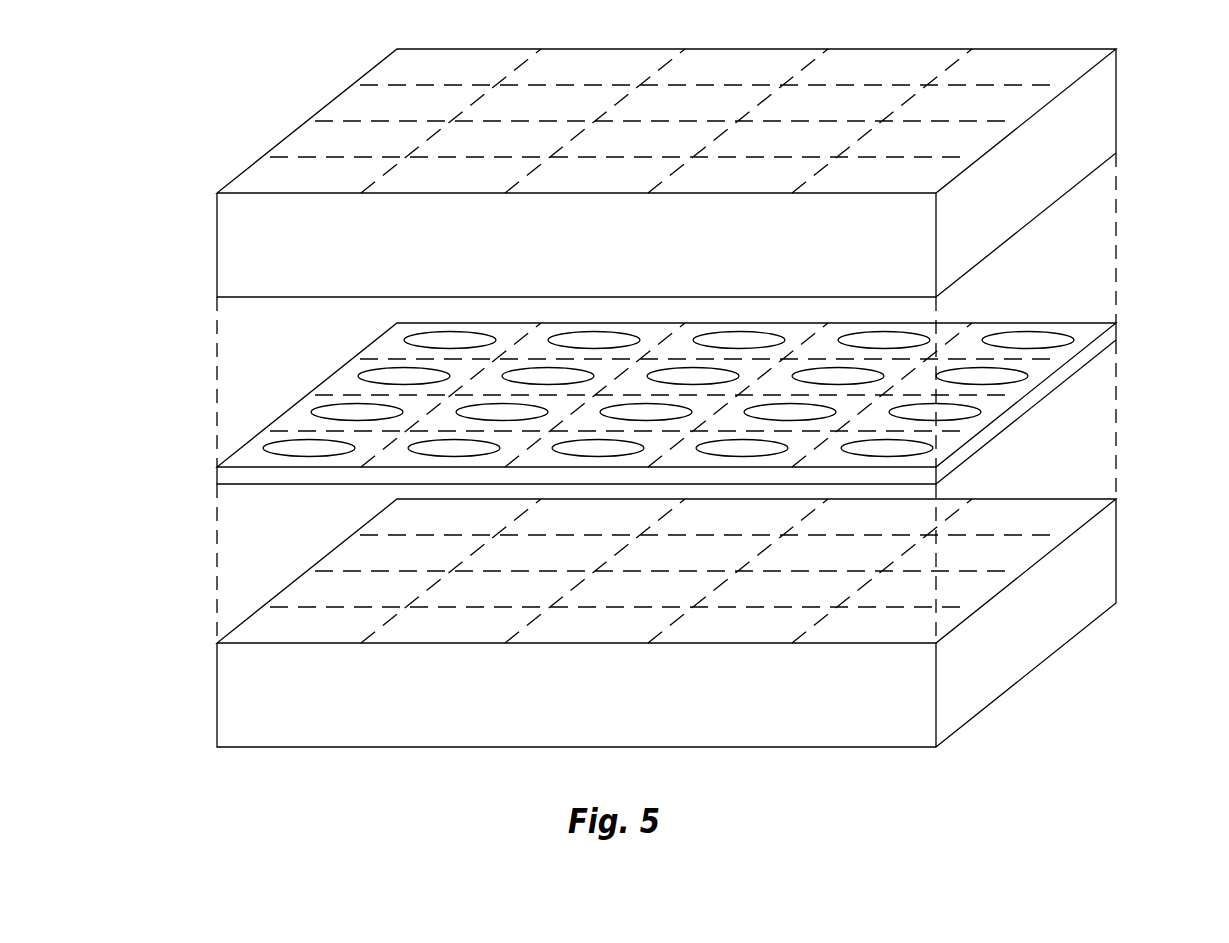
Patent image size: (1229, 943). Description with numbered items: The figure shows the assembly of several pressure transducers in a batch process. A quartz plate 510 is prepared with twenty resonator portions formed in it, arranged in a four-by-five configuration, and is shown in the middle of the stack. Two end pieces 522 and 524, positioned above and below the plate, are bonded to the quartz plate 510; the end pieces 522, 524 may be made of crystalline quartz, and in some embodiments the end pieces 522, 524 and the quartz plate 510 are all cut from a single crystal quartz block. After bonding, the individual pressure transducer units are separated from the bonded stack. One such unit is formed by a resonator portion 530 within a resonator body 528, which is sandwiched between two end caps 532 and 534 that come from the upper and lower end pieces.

The quartz plate 510 is at (668, 385).
The end piece 522 is at (687, 173).
The end piece 524 is at (684, 623).
The resonator body 528 is at (245, 462).
The resonator portion 530 is at (298, 447).
The end cap 532 is at (253, 178).
The end cap 534 is at (252, 632).